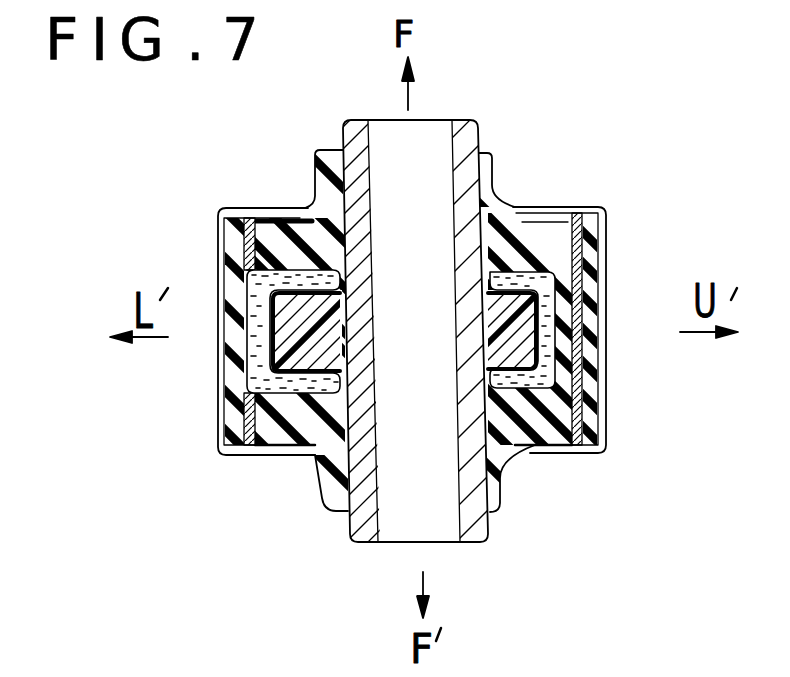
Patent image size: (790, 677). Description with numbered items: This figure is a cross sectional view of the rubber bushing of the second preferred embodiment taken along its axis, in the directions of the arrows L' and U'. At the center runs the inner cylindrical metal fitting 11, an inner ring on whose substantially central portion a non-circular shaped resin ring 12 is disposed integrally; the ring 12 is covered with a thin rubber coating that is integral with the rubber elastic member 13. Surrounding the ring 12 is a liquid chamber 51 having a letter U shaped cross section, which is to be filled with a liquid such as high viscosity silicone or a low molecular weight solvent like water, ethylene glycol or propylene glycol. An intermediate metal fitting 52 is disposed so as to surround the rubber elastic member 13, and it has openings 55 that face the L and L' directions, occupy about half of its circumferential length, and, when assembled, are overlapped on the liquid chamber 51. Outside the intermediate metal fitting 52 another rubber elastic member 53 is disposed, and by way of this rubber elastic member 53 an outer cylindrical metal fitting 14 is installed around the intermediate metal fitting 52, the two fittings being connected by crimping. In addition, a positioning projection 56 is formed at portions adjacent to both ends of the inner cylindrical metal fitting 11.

The inner cylindrical metal fitting 11 is at (549, 100).
The resin ring 12 is at (558, 309).
The rubber elastic member 13 is at (520, 225).
The outer cylindrical metal fitting 14 is at (676, 178).
The liquid chamber 51 is at (606, 258).
The intermediate metal fitting 52 is at (590, 430).
The rubber elastic member 53 is at (594, 388).
The openings 55 is at (249, 251).
The positioning projection 56 is at (323, 178).